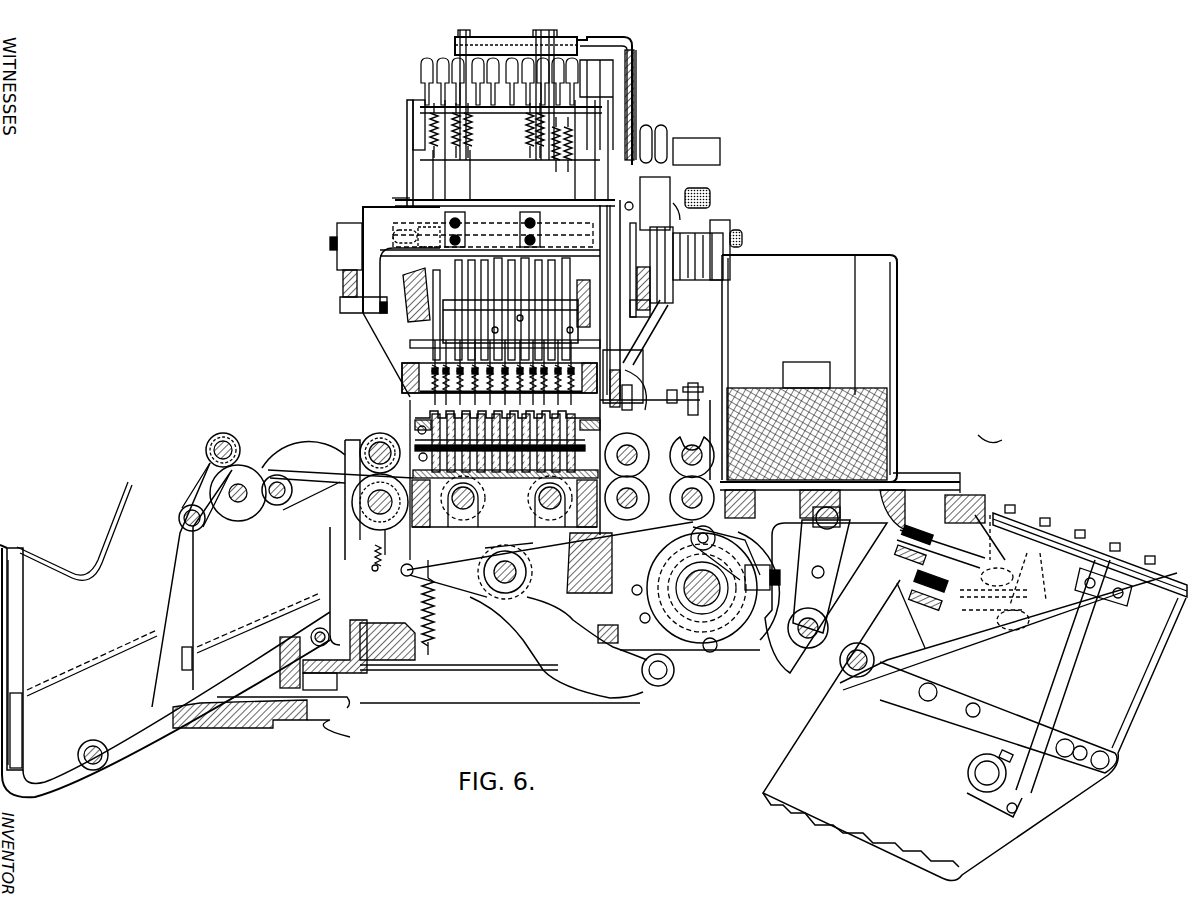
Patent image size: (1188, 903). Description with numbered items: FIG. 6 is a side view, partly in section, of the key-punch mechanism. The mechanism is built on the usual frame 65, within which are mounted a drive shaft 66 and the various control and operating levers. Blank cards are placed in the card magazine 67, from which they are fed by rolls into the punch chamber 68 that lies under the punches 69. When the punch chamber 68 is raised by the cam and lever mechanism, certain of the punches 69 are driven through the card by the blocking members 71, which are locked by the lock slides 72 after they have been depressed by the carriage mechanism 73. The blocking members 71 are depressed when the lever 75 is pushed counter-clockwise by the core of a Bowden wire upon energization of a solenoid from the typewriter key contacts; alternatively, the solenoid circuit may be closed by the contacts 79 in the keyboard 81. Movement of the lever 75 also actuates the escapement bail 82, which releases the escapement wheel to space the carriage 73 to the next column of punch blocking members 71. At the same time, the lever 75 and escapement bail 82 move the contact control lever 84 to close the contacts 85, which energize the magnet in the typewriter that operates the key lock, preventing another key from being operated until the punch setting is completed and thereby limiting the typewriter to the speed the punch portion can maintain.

The frame 65 is at (360, 440).
The drive shaft 66 is at (687, 665).
The card magazine 67 is at (892, 370).
The punch chamber 68 is at (524, 488).
The punches 69 is at (410, 403).
The blocking members 71 is at (408, 350).
The lock slides 72 is at (496, 309).
The carriage mechanism 73 is at (380, 212).
The lever 75 is at (434, 62).
The contacts 79 is at (1040, 598).
The keyboard 81 is at (1172, 572).
The escapement bail 82 is at (407, 125).
The contact control lever 84 is at (618, 250).
The contacts 85 is at (578, 233).